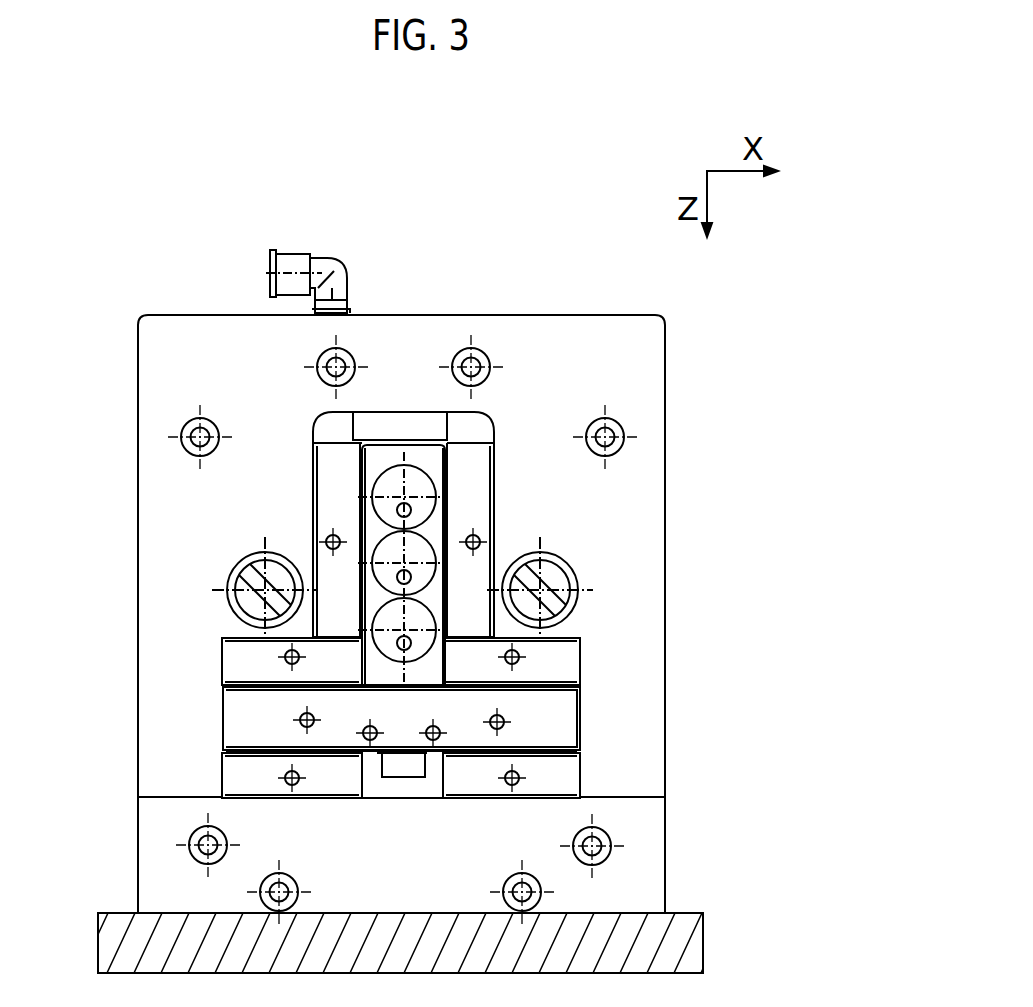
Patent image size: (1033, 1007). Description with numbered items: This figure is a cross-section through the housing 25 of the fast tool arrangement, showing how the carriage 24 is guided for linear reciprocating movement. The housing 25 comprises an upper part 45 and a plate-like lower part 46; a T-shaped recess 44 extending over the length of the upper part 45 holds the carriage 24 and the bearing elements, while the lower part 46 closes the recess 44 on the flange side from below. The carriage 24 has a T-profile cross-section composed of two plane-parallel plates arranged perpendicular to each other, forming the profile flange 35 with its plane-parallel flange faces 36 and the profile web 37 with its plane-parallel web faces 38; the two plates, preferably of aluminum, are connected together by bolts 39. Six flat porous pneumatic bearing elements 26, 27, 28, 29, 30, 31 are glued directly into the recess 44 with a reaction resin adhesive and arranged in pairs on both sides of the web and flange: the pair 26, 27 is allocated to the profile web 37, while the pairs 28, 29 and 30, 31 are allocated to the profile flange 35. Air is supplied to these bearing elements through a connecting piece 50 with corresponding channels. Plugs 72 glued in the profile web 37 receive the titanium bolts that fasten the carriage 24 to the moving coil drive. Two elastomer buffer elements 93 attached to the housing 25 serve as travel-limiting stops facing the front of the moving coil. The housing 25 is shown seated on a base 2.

The base plate 2 is at (683, 950).
The carriage 24 is at (262, 713).
The housing 25 is at (665, 370).
The pneumatic bearing element 26 is at (333, 480).
The pneumatic bearing element 27 is at (482, 483).
The pneumatic bearing element 28 is at (240, 657).
The pneumatic bearing element 29 is at (240, 771).
The pneumatic bearing element 30 is at (562, 665).
The pneumatic bearing element 31 is at (562, 778).
The profile flange 35 is at (562, 722).
The flange faces 36 is at (552, 688).
The profile web 37 is at (383, 458).
The web faces 38 is at (362, 523).
The bolts 39 is at (405, 767).
The T-shaped recess 44 is at (485, 428).
The upper part 45 is at (647, 502).
The lower part 46 is at (643, 860).
The connecting piece 50 is at (328, 266).
The plugs 72 is at (420, 485).
The buffer elements 93 is at (243, 580).